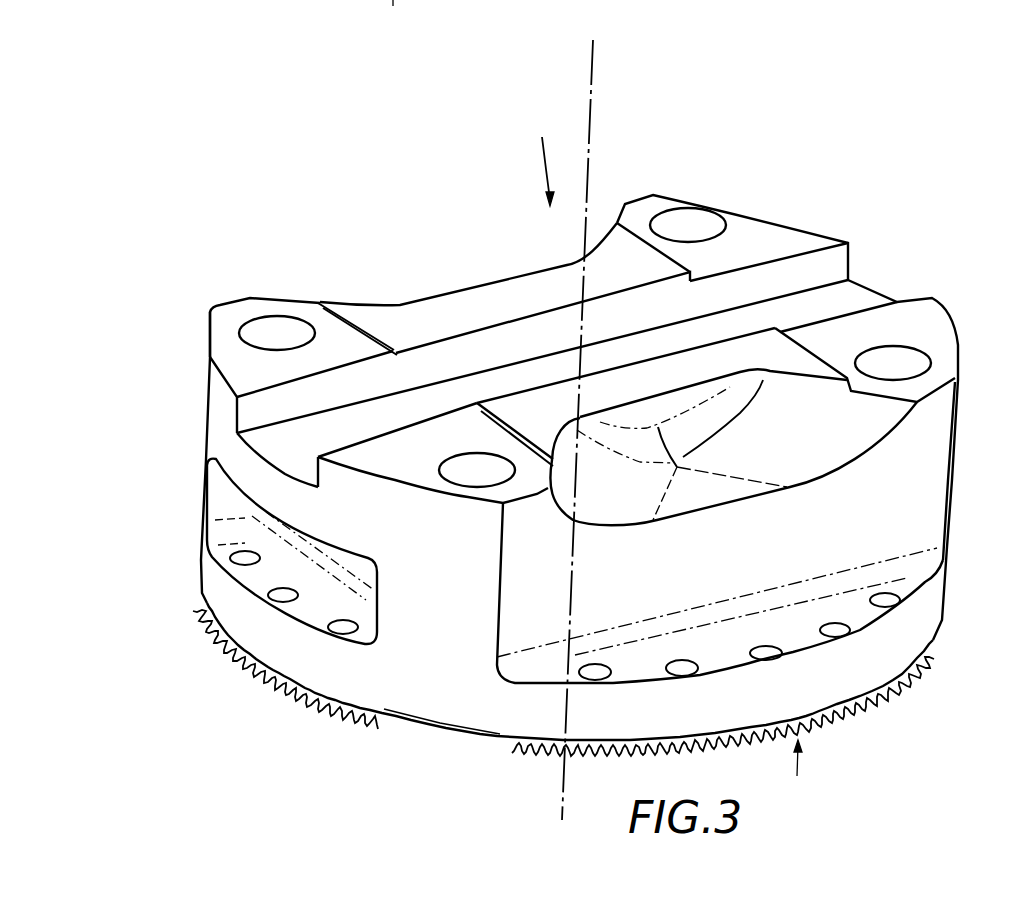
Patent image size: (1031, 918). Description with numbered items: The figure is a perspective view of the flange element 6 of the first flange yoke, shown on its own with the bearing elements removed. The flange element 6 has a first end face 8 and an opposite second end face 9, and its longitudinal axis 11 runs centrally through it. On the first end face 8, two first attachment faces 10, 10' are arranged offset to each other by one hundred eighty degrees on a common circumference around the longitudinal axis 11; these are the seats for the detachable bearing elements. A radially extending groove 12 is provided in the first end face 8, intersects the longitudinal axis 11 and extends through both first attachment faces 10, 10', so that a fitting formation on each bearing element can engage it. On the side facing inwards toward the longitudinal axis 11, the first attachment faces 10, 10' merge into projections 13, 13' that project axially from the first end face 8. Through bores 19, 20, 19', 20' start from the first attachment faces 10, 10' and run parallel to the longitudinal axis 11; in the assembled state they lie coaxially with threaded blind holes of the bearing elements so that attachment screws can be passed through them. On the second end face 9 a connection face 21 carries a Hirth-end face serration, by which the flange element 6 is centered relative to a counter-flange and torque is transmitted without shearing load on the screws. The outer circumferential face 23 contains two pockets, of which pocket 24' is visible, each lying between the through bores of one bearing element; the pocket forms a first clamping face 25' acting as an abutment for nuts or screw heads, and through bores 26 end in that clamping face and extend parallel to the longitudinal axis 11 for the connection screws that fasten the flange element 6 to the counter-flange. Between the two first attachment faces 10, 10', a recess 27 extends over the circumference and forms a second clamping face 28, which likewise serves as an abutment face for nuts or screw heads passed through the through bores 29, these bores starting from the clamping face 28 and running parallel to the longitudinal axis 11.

The flange element 6 is at (962, 478).
The first end face 8 is at (541, 157).
The second end face 9 is at (804, 772).
The first attachment face 10 is at (732, 230).
The first attachment face 10' is at (265, 344).
The longitudinal axis 11 is at (596, 62).
The groove 12 is at (865, 298).
The projection 13 is at (682, 247).
The projection 13' is at (347, 305).
The through bore 19 is at (893, 350).
The through bore 19' is at (435, 453).
The through bore 20 is at (688, 206).
The through bore 20' is at (277, 303).
The connection face 21 is at (870, 712).
The outer circumferential face 23 is at (960, 380).
The pocket 24' is at (292, 551).
The first clamping face 25' is at (254, 556).
The through bores 26 is at (285, 598).
The recess 27 is at (938, 450).
The second clamping face 28 is at (818, 648).
The through bores 29 is at (683, 674).